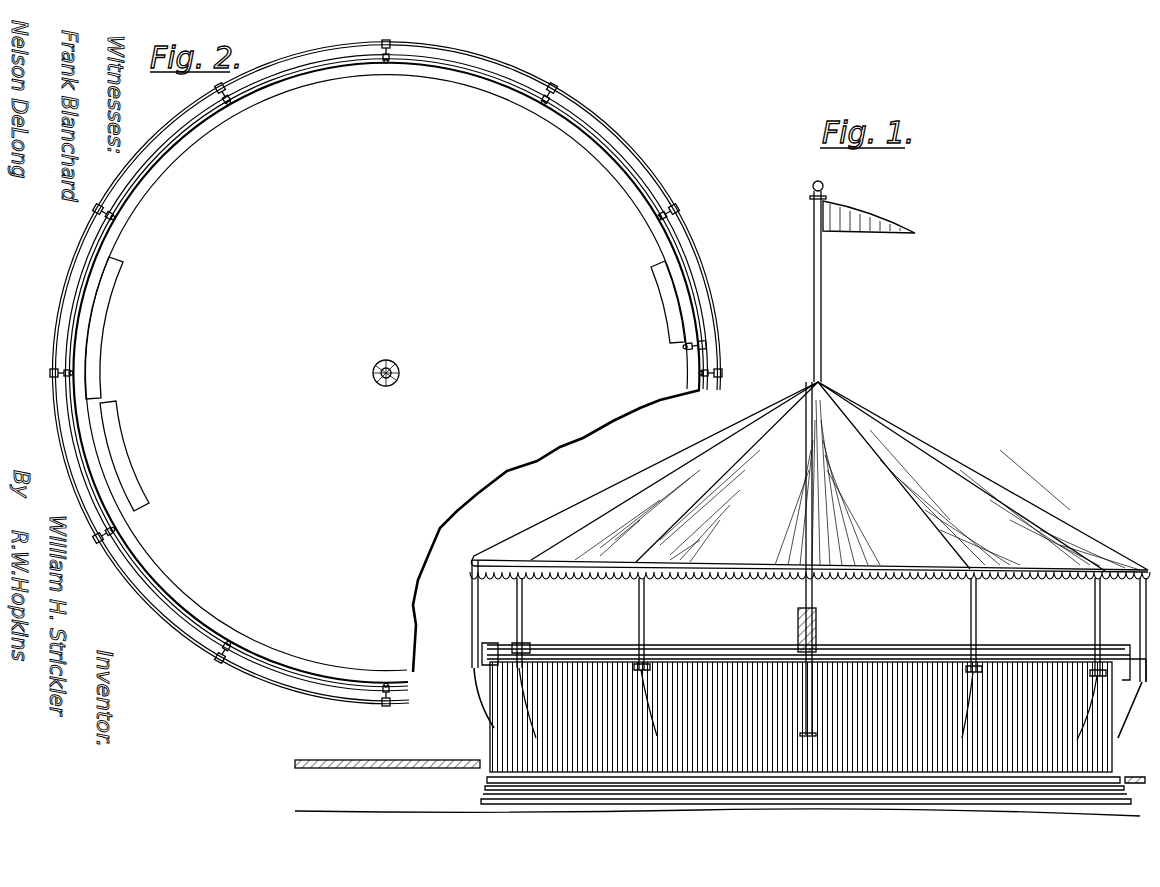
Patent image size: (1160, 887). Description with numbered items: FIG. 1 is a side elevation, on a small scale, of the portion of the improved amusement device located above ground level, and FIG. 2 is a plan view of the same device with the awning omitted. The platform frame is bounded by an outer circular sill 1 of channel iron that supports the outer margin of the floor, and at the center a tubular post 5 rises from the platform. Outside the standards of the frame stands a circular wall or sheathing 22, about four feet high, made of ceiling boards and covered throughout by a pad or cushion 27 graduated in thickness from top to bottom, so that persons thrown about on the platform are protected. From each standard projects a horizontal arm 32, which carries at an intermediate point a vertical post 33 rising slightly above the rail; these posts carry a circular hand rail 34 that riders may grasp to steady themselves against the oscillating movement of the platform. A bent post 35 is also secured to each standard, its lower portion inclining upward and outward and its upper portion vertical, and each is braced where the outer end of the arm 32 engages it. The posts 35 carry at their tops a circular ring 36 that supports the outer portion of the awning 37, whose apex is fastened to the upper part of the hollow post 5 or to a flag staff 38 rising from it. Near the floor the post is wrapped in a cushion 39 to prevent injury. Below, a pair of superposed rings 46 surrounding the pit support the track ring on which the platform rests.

In FIG. 1, the outer circular sill 1 is at (486, 776).
In FIG. 2, the tubular post 5 is at (392, 375).
In FIG. 1, the tubular post 5 is at (814, 622).
In FIG. 1, the circular wall or sheathing 22 is at (492, 740).
In FIG. 2, the pad or cushion 27 is at (106, 363).
In FIG. 2, the horizontal arm 32 is at (118, 204).
In FIG. 1, the horizontal arm 32 is at (476, 690).
In FIG. 1, the post 33 is at (481, 655).
In FIG. 2, the circular hand rail 34 is at (68, 306).
In FIG. 1, the circular hand rail 34 is at (567, 647).
In FIG. 1, the post 35 is at (517, 603).
In FIG. 2, the circular ring 36 is at (55, 344).
In FIG. 1, the awning 37 is at (770, 545).
In FIG. 1, the flag staff 38 is at (813, 293).
In FIG. 2, the cushion 39 is at (397, 366).
In FIG. 1, the cushion 39 is at (818, 632).
In FIG. 1, the superposed rings 46 is at (485, 800).